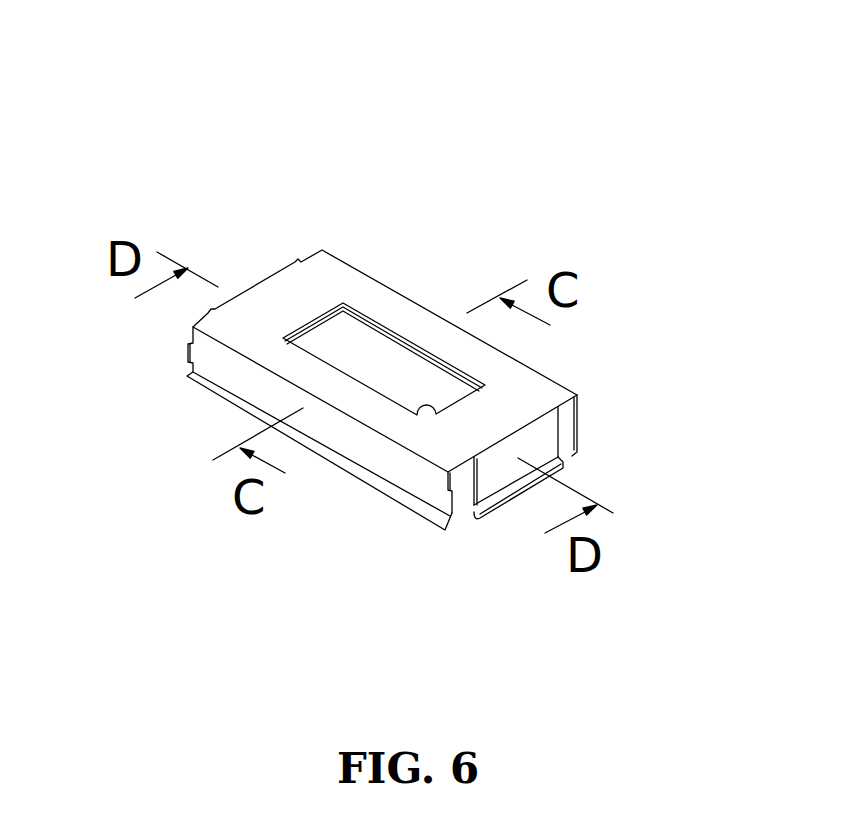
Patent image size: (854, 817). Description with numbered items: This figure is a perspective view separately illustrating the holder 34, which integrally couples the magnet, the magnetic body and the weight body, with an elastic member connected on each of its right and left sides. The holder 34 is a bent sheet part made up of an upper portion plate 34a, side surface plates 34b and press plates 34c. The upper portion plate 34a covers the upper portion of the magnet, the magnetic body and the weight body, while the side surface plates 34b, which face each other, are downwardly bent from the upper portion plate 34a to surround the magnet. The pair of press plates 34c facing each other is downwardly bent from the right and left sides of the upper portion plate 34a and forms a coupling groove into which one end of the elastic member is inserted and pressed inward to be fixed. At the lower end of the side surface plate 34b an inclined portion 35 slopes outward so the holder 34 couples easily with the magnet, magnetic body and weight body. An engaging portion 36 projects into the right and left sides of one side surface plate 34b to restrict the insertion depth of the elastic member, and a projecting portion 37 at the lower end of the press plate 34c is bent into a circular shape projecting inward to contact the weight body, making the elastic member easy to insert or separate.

The holder 34 is at (441, 45).
The upper portion plate 34a is at (384, 302).
The side surface plate 34b is at (388, 460).
The press plate 34c is at (547, 447).
The inclined portion 35 is at (427, 515).
The engaging portion 36 is at (455, 508).
The projecting portion 37 is at (488, 515).